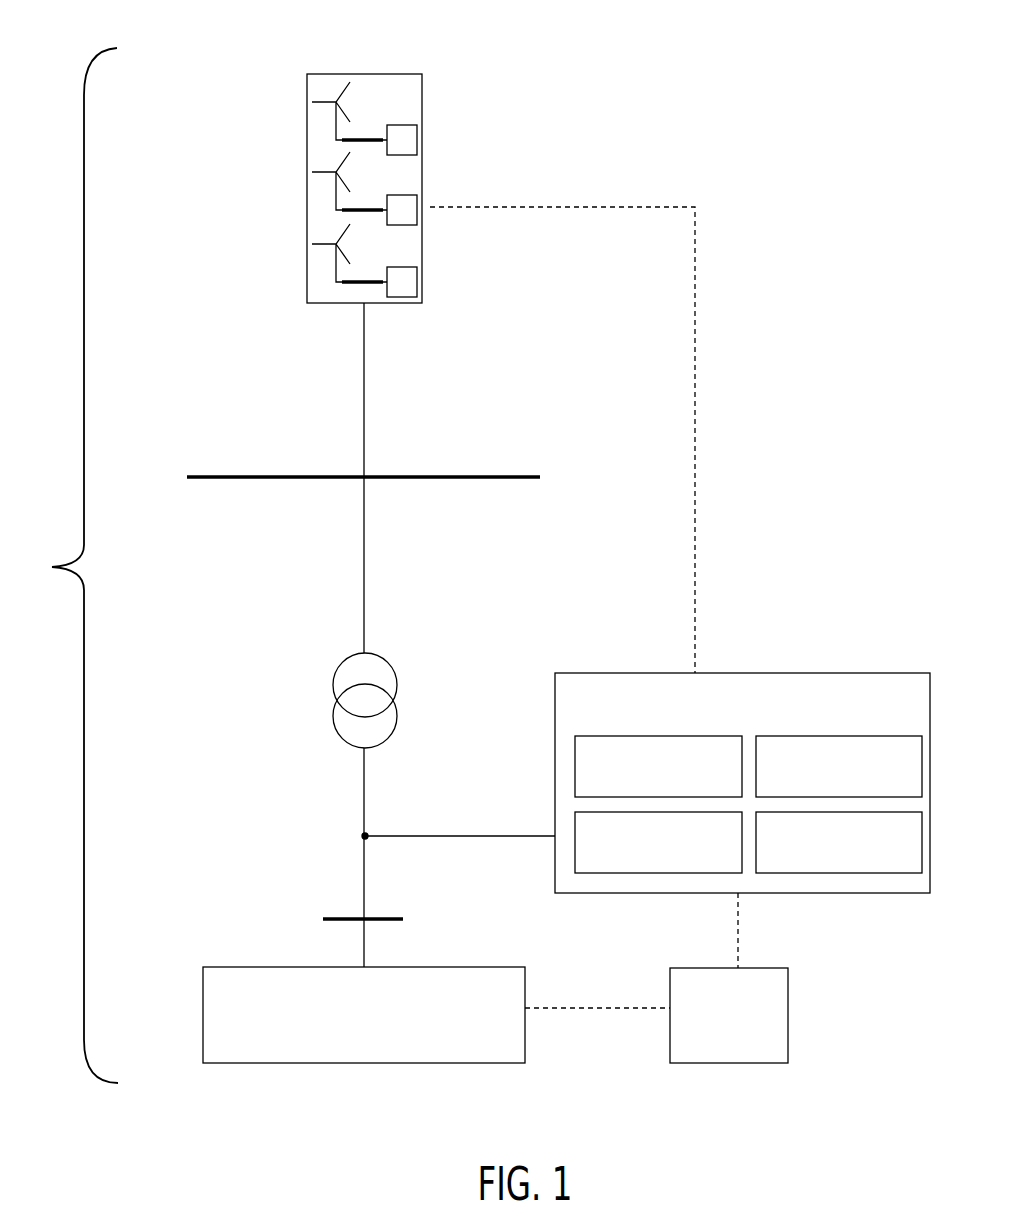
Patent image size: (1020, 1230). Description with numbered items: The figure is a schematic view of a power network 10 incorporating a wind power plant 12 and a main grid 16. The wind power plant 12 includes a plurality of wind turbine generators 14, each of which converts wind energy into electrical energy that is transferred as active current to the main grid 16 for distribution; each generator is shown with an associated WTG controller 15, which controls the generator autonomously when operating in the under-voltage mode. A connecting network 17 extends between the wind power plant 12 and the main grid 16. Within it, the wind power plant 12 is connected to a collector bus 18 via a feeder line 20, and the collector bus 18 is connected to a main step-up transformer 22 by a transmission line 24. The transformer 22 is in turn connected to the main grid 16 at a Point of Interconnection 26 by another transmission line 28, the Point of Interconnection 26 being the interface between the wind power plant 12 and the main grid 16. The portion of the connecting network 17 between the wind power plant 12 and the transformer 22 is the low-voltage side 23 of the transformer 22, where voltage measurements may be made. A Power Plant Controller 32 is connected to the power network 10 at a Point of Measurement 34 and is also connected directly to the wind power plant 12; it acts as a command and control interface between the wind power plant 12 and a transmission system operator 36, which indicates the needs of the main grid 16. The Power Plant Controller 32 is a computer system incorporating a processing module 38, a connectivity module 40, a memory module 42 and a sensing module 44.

The power network 10 is at (68, 565).
The wind power plant 12 is at (645, 98).
The wind turbine generator 14 is at (332, 131).
The WTG controller 15 is at (421, 135).
The main grid 16 is at (228, 966).
The connecting network 17 is at (195, 517).
The collector bus 18 is at (500, 476).
The feeder line 20 is at (364, 382).
The main step-up transformer 22 is at (392, 662).
The low-voltage side 23 is at (647, 435).
The transmission line 24 is at (364, 544).
The Point of Interconnection 26 is at (392, 915).
The transmission line 28 is at (365, 780).
The Power Plant Controller 32 is at (775, 673).
The Point of Measurement 34 is at (372, 832).
The transmission system operator 36 is at (788, 1014).
The processing module 38 is at (622, 736).
The connectivity module 40 is at (862, 736).
The memory module 42 is at (620, 873).
The sensing module 44 is at (840, 873).